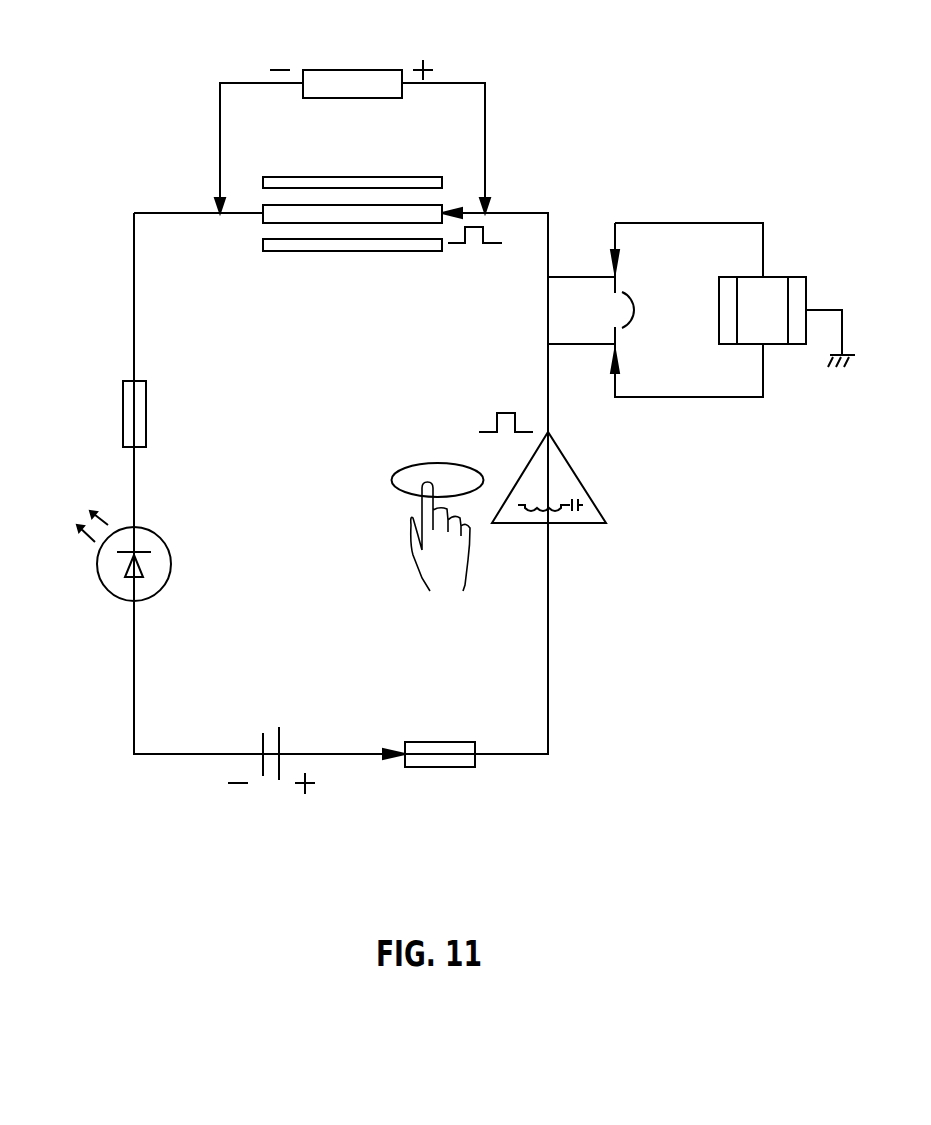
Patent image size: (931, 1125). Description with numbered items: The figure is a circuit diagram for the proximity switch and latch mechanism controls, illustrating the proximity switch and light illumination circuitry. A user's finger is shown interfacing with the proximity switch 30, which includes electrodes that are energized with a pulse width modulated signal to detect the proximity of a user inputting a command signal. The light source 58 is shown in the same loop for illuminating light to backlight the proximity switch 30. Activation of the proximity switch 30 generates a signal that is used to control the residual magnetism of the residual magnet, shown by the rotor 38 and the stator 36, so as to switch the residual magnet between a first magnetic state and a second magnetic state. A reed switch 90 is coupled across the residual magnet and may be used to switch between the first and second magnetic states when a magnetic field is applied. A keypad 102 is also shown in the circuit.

The reed switch 90 is at (356, 78).
The rotor 38 is at (357, 179).
The stator 36 is at (348, 243).
The proximity switch 30 is at (410, 465).
The light source 58 is at (97, 570).
The keypad 102 is at (776, 285).